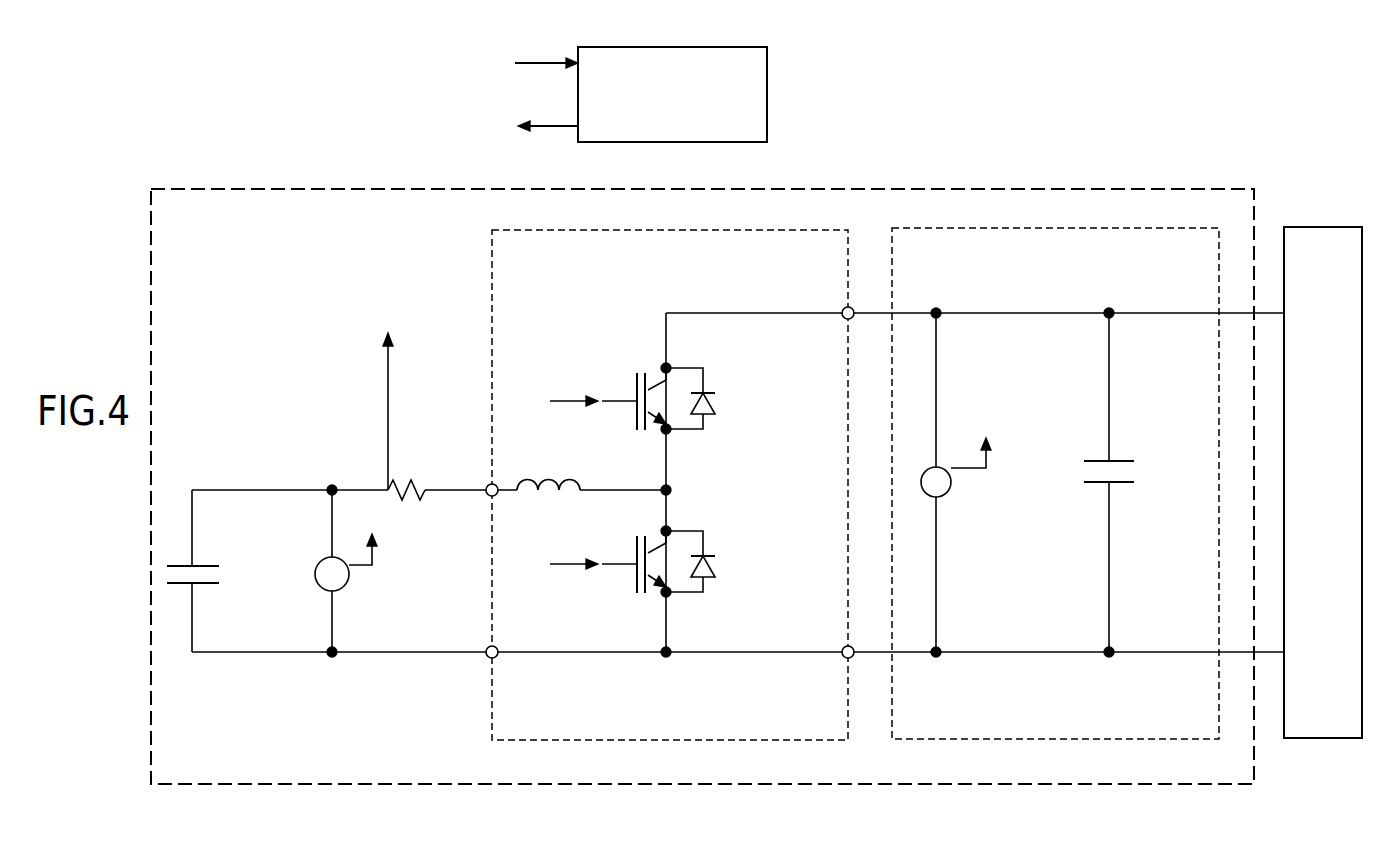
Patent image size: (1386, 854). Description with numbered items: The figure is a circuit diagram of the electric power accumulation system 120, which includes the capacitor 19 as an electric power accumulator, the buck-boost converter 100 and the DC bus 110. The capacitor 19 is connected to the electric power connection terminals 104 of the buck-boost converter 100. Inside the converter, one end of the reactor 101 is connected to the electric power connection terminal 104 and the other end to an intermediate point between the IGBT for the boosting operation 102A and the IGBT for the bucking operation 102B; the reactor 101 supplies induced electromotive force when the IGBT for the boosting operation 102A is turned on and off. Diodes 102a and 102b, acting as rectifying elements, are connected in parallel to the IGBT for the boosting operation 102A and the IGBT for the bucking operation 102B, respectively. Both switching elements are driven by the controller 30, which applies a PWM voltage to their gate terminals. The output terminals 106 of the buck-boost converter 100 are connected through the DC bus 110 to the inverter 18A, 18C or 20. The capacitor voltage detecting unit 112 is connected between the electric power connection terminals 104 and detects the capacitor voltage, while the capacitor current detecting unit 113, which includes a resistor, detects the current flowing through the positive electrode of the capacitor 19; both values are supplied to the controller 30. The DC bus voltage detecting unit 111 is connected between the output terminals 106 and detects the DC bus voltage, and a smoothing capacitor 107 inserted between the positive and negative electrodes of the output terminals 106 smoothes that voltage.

The controller 30 is at (683, 47).
The electric power accumulation system 120 is at (1155, 188).
The buck-boost converter 100 is at (740, 229).
The DC bus 110 is at (1190, 228).
The inverter 18A is at (1323, 455).
The inverter 18C is at (1323, 455).
The inverter 20 is at (1326, 227).
The capacitor 19 is at (222, 574).
The capacitor voltage detecting unit 112 is at (350, 574).
The capacitor current detecting unit 113 is at (405, 480).
The electric power connection terminals 104 is at (486, 496).
The reactor 101 is at (546, 477).
The IGBT for the boosting operation 102A is at (638, 598).
The IGBT for the bucking operation 102B is at (641, 372).
The diode 102a is at (716, 568).
The diode 102b is at (716, 406).
The output terminals 106 is at (844, 308).
The DC bus voltage detecting unit 111 is at (953, 482).
The smoothing capacitor 107 is at (1134, 476).